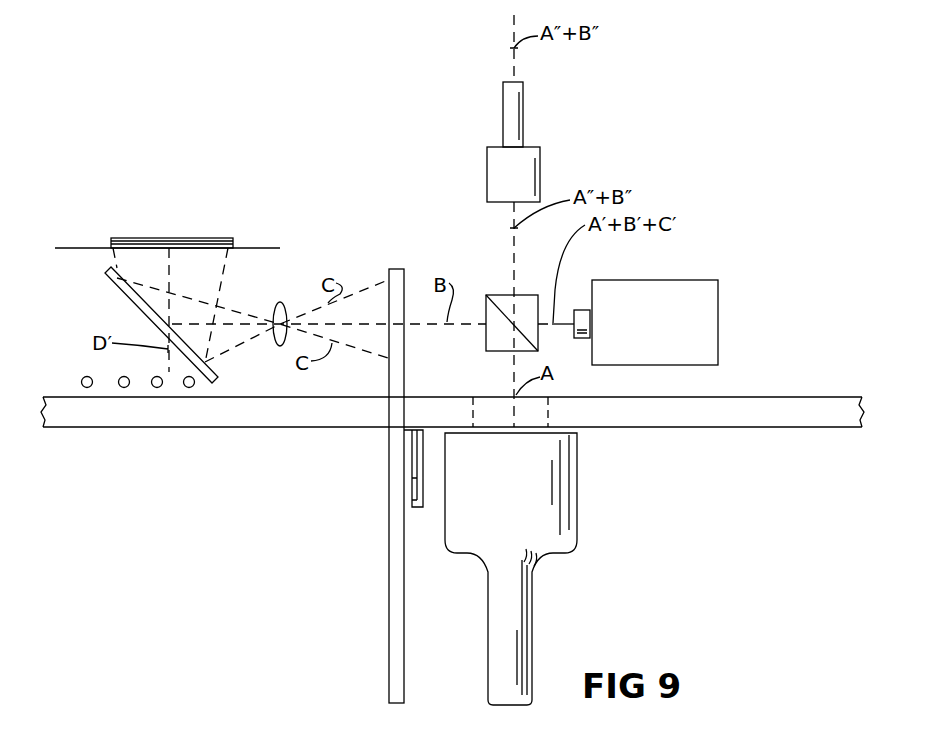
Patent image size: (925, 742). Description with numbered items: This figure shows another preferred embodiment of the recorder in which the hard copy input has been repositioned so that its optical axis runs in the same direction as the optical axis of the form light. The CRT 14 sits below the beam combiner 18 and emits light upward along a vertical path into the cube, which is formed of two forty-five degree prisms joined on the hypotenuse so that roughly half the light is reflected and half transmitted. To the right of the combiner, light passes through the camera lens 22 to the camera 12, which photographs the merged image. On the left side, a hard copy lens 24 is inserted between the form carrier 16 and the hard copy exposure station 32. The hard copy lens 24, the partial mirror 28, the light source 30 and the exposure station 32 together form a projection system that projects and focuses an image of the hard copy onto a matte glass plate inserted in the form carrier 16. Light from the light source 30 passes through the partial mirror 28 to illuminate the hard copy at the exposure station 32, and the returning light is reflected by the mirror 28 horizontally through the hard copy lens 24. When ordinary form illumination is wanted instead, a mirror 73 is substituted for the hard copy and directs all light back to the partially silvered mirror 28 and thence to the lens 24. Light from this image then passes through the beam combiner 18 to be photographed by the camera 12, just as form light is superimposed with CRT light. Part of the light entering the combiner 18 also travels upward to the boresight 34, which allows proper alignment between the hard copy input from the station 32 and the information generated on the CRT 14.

The camera 12 is at (665, 280).
The CRT 14 is at (577, 510).
The form carrier 16 is at (389, 465).
The beam combiner 18 is at (497, 295).
The camera lens 22 is at (580, 310).
The hard copy lens 24 is at (283, 305).
The partial mirror 28 is at (120, 291).
The light source 30 is at (87, 388).
The exposure station 32 is at (185, 238).
The boresight 34 is at (540, 155).
The mirror 73 is at (103, 248).